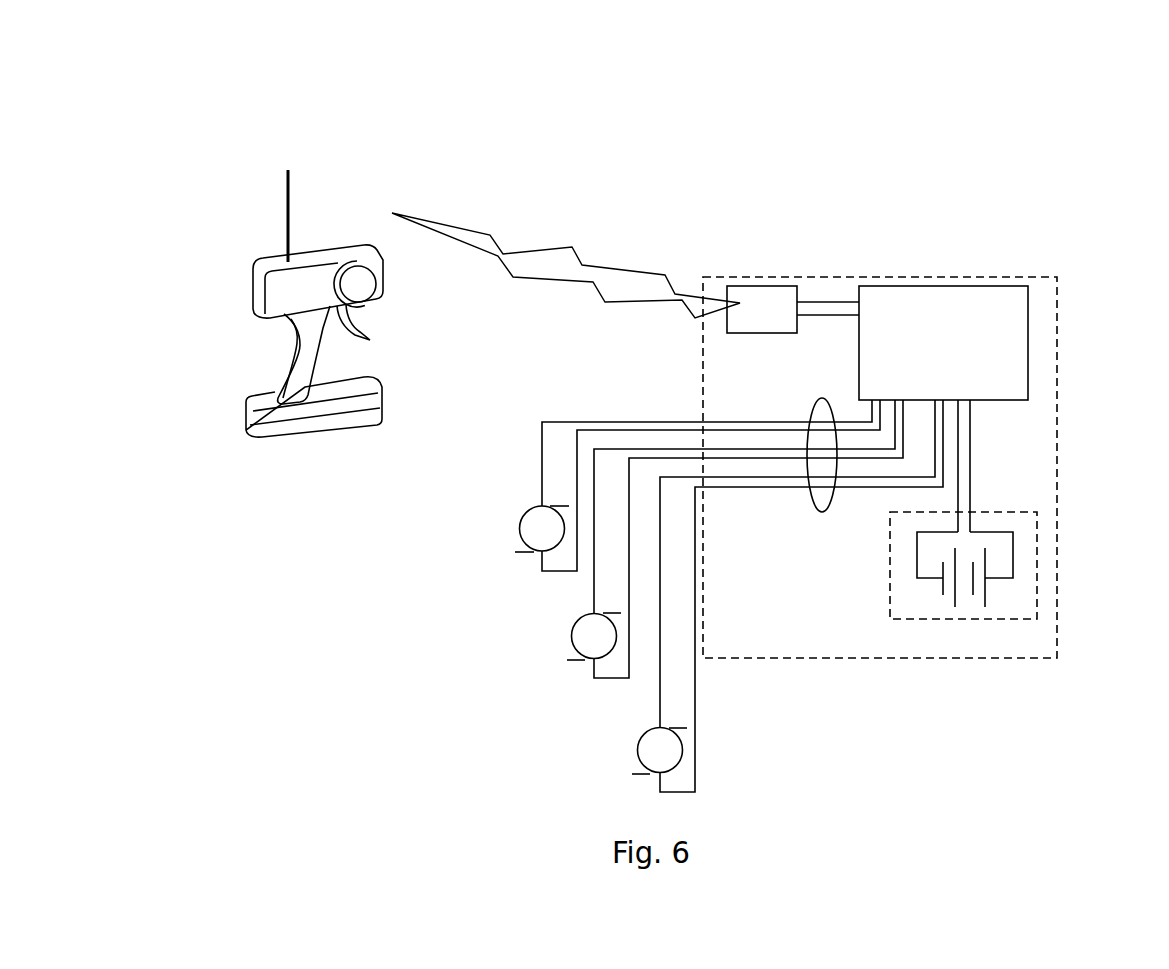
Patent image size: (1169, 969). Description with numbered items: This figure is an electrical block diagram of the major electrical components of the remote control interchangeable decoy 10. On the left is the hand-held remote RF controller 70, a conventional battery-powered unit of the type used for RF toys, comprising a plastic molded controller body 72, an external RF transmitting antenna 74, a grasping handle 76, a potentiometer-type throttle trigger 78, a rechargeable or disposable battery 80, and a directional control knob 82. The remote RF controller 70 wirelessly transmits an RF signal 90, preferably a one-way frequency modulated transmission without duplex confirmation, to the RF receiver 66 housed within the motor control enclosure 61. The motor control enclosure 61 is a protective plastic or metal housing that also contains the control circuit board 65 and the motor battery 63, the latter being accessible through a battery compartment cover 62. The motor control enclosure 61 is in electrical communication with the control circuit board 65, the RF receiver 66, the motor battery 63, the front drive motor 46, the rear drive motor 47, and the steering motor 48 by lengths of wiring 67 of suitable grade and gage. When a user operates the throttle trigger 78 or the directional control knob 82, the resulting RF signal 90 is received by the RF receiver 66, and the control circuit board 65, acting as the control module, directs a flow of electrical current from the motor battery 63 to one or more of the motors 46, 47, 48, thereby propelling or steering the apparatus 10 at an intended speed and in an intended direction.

The remote control interchangeable decoy 10 is at (1092, 173).
The front drive motor 46 is at (520, 522).
The rear drive motor 47 is at (570, 631).
The steering motor 48 is at (635, 747).
The motor control enclosure 61 is at (817, 662).
The battery compartment cover 62 is at (913, 620).
The motor battery 63 is at (972, 603).
The control circuit board 65 is at (900, 300).
The RF receiver 66 is at (782, 293).
The wiring 67 is at (812, 500).
The remote RF controller 70 is at (251, 454).
The controller body 72 is at (268, 292).
The RF transmitting antenna 74 is at (291, 198).
The grasping handle 76 is at (268, 400).
The throttle trigger 78 is at (372, 340).
The battery 80 is at (340, 427).
The directional control knob 82 is at (365, 287).
The RF signal 90 is at (515, 245).